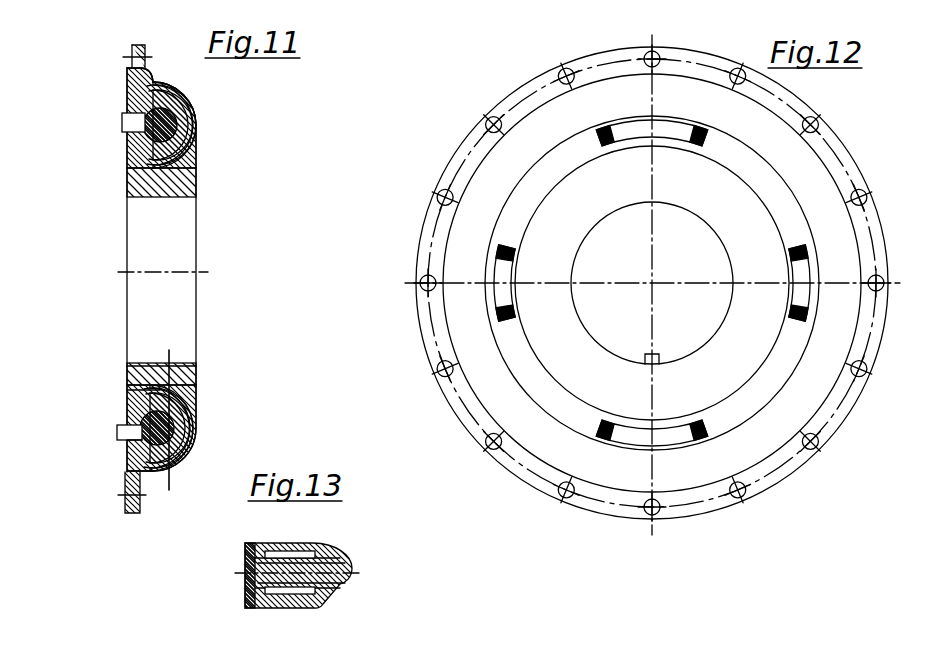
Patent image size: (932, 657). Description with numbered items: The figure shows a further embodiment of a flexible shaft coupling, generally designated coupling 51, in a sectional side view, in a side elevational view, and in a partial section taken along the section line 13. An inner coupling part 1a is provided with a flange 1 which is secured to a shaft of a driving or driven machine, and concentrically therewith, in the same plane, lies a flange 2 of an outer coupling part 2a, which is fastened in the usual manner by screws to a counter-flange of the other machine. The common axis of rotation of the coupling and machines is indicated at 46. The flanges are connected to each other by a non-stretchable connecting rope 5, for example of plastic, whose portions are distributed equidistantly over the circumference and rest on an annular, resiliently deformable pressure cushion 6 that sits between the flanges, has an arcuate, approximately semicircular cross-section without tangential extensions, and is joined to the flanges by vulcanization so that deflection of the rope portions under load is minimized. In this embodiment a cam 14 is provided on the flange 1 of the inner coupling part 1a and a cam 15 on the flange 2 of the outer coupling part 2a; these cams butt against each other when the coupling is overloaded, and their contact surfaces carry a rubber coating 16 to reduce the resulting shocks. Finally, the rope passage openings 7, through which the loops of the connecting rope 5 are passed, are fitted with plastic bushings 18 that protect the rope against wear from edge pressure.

In FIG. 11, the flange 1 is at (126, 413).
In FIG. 11, the inner coupling part 1a is at (180, 186).
In FIG. 12, the inner coupling part 1a is at (580, 326).
In FIG. 11, the flange 2 is at (125, 455).
In FIG. 11, the outer coupling part 2a is at (128, 507).
In FIG. 12, the outer coupling part 2a is at (434, 289).
In FIG. 11, the connecting rope 5 is at (193, 432).
In FIG. 13, the connecting rope 5 is at (335, 578).
In FIG. 11, the pressure cushion 6 is at (187, 413).
In FIG. 13, the pressure cushion 6 is at (345, 554).
In FIG. 13, the rope passage openings 7 is at (246, 602).
In FIG. 11, the section line 13 is at (172, 374).
In FIG. 11, the cam 14 is at (127, 425).
In FIG. 12, the cam 14 is at (499, 262).
In FIG. 11, the cam 15 is at (125, 440).
In FIG. 12, the cam 15 is at (668, 442).
In FIG. 12, the rubber coating 16 is at (503, 247).
In FIG. 11, the bushings 18 is at (128, 389).
In FIG. 13, the bushings 18 is at (322, 597).
In FIG. 11, the axis of rotation 46 is at (212, 273).
In FIG. 12, the axis of rotation 46 is at (657, 279).
In FIG. 11, the coupling 51 is at (198, 141).
In FIG. 12, the coupling 51 is at (846, 150).